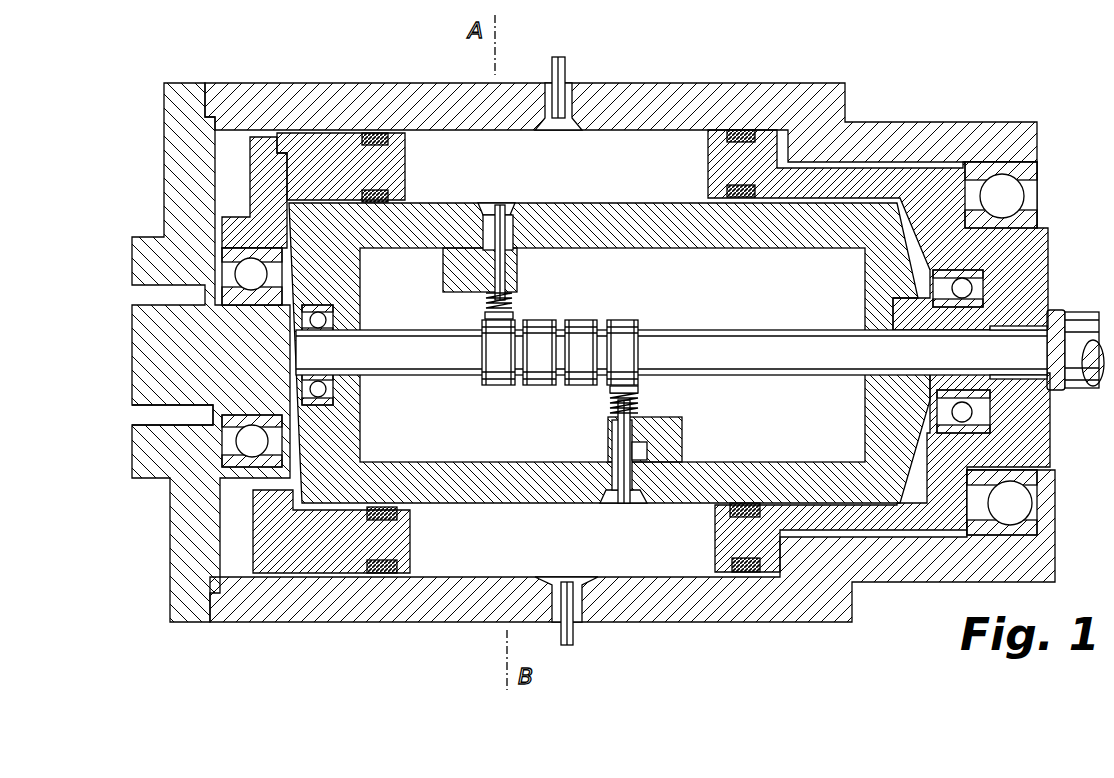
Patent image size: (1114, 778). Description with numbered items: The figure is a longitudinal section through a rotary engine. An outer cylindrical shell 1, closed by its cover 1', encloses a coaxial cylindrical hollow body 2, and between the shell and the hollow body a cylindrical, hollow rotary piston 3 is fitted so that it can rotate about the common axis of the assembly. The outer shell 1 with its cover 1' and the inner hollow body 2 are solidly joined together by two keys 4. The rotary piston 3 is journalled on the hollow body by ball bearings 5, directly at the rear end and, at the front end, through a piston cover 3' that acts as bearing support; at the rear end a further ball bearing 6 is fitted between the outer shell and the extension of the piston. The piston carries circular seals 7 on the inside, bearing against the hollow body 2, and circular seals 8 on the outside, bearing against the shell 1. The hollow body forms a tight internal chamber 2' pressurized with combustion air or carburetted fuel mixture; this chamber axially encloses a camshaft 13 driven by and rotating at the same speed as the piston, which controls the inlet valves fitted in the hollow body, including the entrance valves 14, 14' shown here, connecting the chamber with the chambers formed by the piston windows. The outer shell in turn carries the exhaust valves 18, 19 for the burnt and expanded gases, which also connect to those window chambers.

The outer cylindrical shell 1 is at (630, 369).
The cover 1' is at (211, 352).
The hollow body 2 is at (906, 375).
The internal chamber 2' is at (609, 353).
The rotary piston 3 is at (331, 401).
The piston cover 3' is at (254, 147).
The key 4 is at (152, 417).
The ball bearing 5 is at (227, 257).
The ball bearing 6 is at (1023, 170).
The circular seal 7 is at (405, 530).
The circular seal 8 is at (380, 575).
The camshaft 13 is at (618, 342).
The entrance valve 14 is at (523, 261).
The entrance valve 14' is at (602, 444).
The exhaust valve 18 is at (558, 85).
The exhaust valve 19 is at (570, 632).